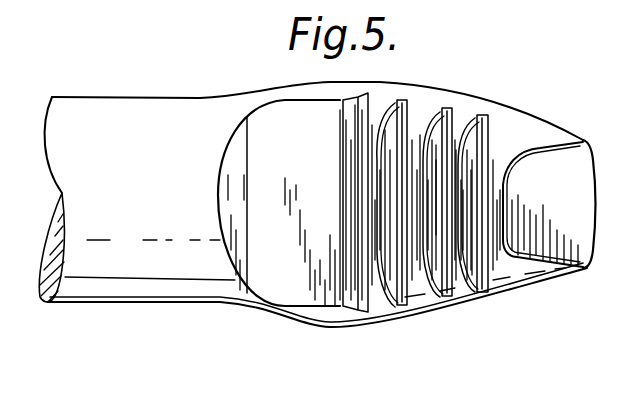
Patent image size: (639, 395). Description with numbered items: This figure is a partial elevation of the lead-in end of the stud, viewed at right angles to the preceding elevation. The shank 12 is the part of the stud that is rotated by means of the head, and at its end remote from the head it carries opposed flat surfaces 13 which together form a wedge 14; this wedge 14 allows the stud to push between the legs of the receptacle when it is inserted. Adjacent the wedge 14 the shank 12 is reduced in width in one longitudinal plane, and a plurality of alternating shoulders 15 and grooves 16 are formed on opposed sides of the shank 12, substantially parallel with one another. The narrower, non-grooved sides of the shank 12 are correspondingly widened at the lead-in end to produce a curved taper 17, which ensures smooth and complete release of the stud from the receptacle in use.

The shank 12 is at (146, 118).
The flat surfaces 13 is at (578, 170).
The wedge 14 is at (497, 198).
The shoulders 15 is at (415, 238).
The grooves 16 is at (367, 108).
The curved taper 17 is at (379, 82).